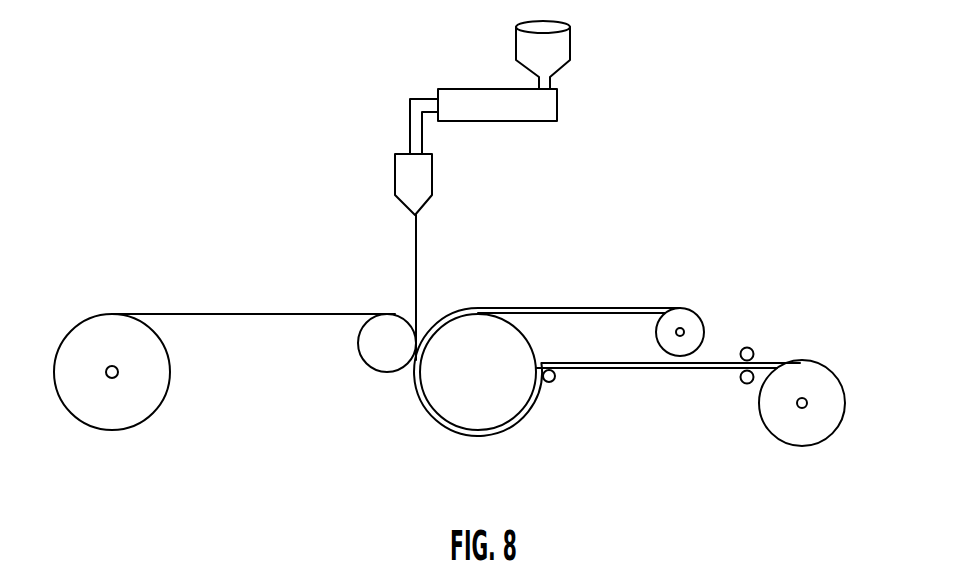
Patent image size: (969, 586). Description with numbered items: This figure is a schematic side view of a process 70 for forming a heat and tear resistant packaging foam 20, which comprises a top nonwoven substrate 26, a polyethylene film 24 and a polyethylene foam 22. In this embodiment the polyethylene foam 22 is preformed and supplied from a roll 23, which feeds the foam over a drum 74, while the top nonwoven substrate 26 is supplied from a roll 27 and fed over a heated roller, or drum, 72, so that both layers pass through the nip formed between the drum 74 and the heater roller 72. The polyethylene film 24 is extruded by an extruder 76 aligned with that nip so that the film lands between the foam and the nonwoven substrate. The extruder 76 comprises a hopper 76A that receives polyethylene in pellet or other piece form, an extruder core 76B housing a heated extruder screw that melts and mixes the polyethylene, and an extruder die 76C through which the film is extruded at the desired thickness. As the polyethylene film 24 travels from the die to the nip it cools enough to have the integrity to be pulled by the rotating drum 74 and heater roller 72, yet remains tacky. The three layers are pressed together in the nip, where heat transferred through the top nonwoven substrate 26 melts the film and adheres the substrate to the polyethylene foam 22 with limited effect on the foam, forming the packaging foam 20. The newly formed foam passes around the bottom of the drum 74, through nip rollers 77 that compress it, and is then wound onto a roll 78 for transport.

The process of forming a tear and heat resistant packaging foam 70 is at (610, 212).
The extruder 76 is at (586, 105).
The hopper 76A is at (565, 38).
The extruder core 76B is at (495, 121).
The extruder die 76C is at (432, 193).
The polyethylene film 24 is at (417, 262).
The roll 27 is at (70, 414).
The top nonwoven substrate 26 is at (207, 313).
The heater roller 72 is at (400, 325).
The drum 74 is at (513, 347).
The heat and tear resistant packaging foam 20 is at (642, 370).
The polyethylene foam 22 is at (598, 307).
The roll 23 is at (693, 322).
The nip rollers 77 is at (752, 348).
The roll 78 is at (807, 402).